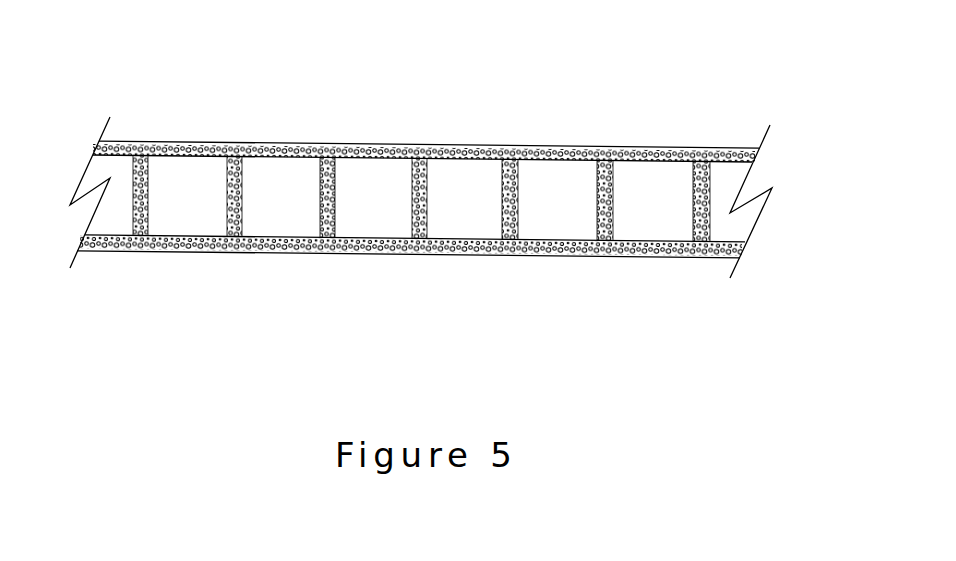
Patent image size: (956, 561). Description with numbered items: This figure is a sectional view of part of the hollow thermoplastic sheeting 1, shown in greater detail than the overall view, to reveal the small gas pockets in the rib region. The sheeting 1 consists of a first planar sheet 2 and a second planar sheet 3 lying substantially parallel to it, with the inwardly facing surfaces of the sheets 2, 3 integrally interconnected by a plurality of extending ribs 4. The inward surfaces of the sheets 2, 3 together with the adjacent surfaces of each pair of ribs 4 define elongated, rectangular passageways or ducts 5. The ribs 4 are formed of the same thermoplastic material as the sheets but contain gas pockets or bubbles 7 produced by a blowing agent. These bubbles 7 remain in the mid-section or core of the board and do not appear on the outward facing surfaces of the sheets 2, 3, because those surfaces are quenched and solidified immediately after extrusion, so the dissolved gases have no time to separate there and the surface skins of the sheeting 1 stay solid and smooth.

The hollow thermoplastic sheeting 1 is at (189, 135).
The first planar sheet 2 is at (743, 139).
The second planar sheet 3 is at (753, 254).
The extending ribs 4 is at (519, 249).
The passageways or ducts 5 is at (419, 199).
The gas pockets or bubbles 7 is at (453, 141).